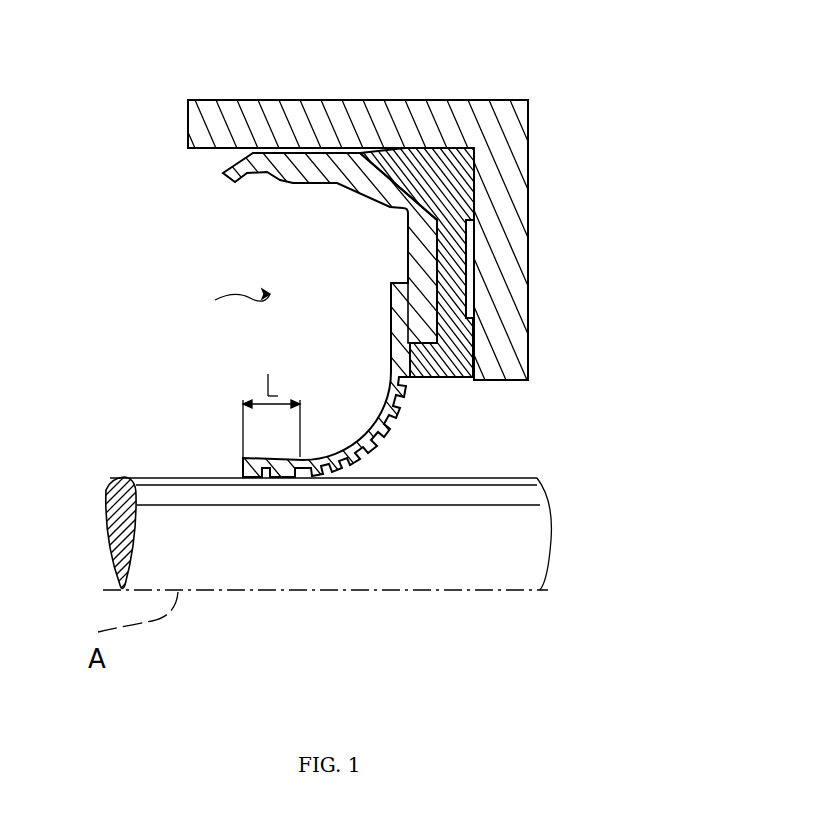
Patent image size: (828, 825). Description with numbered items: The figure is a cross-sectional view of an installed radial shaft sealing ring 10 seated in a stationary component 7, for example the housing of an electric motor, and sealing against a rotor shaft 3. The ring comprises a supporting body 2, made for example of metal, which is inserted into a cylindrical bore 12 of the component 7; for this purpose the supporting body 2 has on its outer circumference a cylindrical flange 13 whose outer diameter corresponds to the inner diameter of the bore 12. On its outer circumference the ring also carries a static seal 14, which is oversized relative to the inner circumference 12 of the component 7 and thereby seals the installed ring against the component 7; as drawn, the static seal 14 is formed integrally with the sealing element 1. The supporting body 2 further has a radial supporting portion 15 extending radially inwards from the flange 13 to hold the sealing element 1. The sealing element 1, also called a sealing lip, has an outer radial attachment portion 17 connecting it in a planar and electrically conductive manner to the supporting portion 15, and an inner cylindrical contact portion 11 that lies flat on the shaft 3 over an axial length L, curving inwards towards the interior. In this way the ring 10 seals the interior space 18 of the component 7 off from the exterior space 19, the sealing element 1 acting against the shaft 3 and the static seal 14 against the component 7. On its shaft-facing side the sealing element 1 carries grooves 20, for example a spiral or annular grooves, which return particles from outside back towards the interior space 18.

The sealing element 1 is at (440, 384).
The supporting body 2 is at (366, 208).
The shaft 3 is at (510, 525).
The component 7 is at (490, 190).
The radial shaft sealing ring 10 is at (221, 301).
The contact portion 11 is at (270, 456).
The cylindrical bore 12 is at (205, 150).
The cylindrical flange 13 is at (298, 165).
The static seal 14 is at (400, 162).
The radial supporting portion 15 is at (426, 270).
The outer radial attachment portion 17 is at (452, 277).
The interior space 18 is at (130, 346).
The exterior space 19 is at (650, 165).
The grooves 20 is at (318, 480).